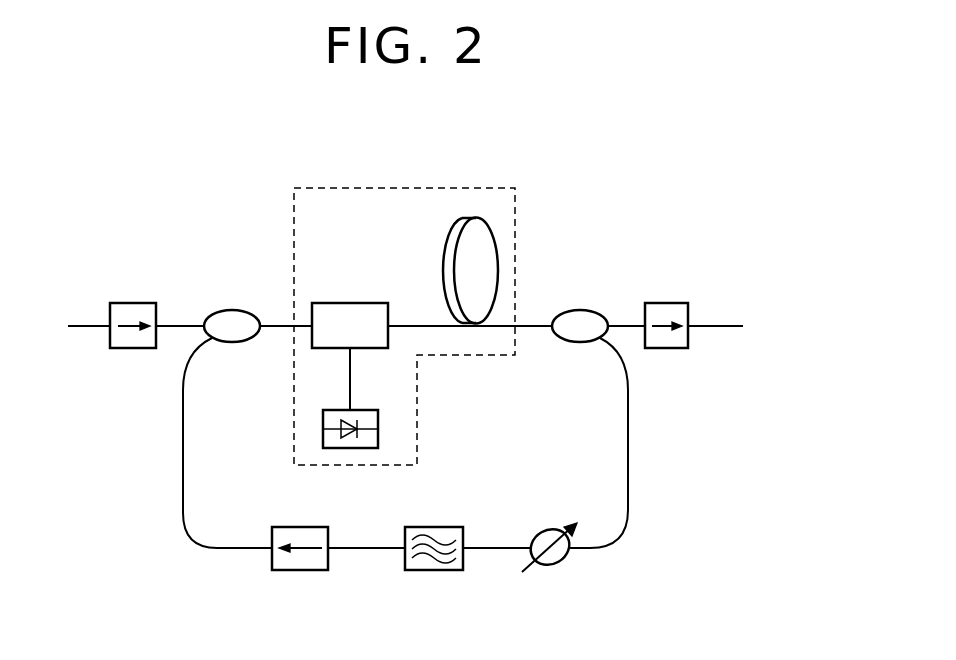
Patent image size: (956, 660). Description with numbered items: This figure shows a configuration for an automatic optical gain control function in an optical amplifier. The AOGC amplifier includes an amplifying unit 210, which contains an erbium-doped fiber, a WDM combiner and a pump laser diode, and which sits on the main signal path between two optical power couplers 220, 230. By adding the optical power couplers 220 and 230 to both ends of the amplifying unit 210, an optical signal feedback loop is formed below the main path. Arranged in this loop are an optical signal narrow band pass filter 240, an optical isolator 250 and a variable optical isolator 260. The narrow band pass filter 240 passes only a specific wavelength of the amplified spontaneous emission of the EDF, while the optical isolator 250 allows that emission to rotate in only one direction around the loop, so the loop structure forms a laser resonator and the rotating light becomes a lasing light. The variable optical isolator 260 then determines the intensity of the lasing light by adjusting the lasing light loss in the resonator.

The amplifying unit 210 is at (405, 188).
The optical power coupler 220 is at (232, 343).
The optical power coupler 230 is at (580, 343).
The optical signal narrow band pass filter 240 is at (434, 570).
The optical isolator 250 is at (298, 570).
The variable optical isolator 260 is at (553, 565).